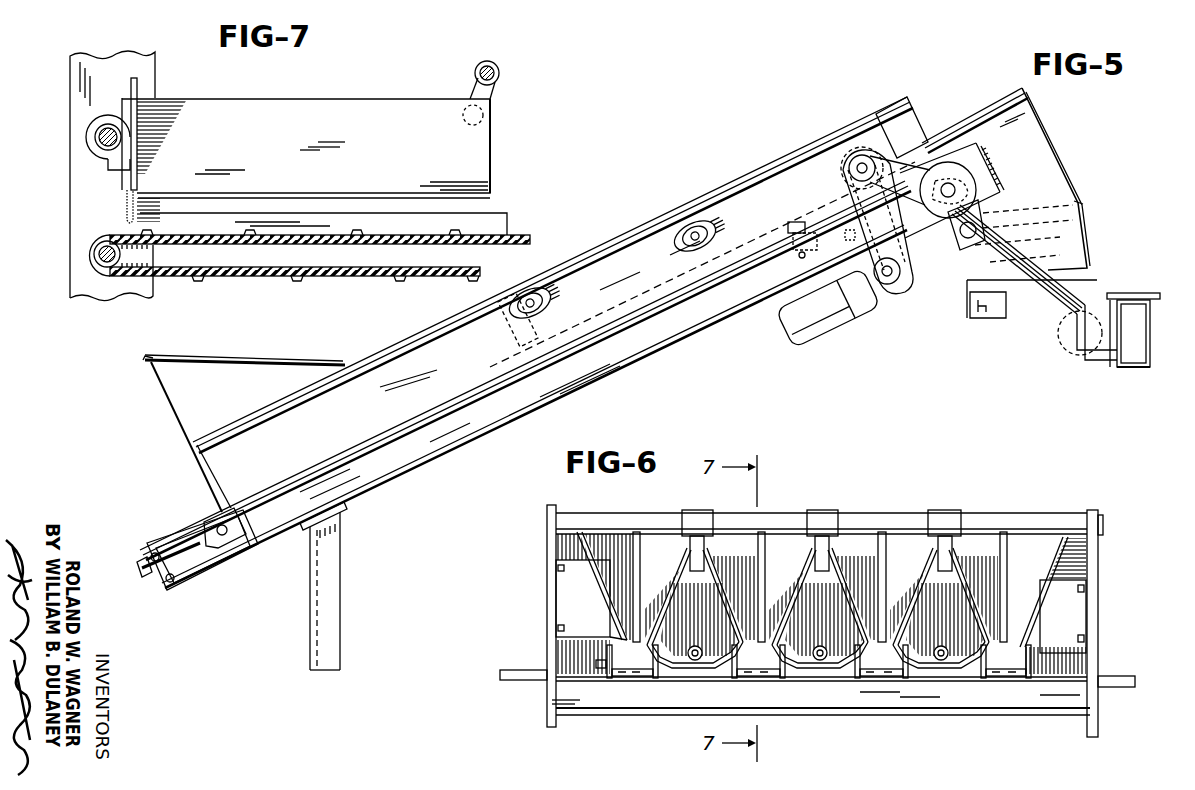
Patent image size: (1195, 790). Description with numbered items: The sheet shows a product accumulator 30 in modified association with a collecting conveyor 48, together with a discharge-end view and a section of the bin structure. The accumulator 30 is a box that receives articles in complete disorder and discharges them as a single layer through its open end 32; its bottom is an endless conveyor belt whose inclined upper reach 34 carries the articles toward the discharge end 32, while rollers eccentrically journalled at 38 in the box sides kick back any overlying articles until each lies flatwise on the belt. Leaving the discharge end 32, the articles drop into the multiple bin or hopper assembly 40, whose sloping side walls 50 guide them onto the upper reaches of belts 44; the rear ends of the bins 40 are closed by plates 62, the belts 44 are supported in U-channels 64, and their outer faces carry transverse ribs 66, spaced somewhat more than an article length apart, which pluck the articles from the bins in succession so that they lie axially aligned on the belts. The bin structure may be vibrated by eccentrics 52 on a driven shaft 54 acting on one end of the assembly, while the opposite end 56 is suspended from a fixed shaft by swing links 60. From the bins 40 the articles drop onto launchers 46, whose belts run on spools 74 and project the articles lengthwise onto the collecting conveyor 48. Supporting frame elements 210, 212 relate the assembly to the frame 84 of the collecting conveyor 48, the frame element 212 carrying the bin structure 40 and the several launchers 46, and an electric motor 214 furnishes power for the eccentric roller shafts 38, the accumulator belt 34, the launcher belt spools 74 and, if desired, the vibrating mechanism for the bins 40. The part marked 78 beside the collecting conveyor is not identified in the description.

In FIG. 5, the accumulator 30 is at (416, 336).
In FIG. 5, the open end 32 is at (905, 110).
In FIG. 5, the inclined upper reach 34 is at (215, 505).
In FIG. 5, the eccentric journal 38 is at (532, 300).
In FIG. 5, the aligning bin 40 is at (1075, 242).
In FIG. 6, the aligning bin 40 is at (652, 540).
In FIG. 7, the belt 44 is at (280, 246).
In FIG. 6, the belt 44 is at (632, 679).
In FIG. 5, the launcher 46 is at (1032, 298).
In FIG. 5, the collecting conveyor 48 is at (1165, 330).
In FIG. 7, the sloping side wall 50 is at (340, 104).
In FIG. 6, the sloping side wall 50 is at (610, 603).
In FIG. 7, the eccentric 52 is at (97, 138).
In FIG. 7, the driven shaft 54 is at (118, 147).
In FIG. 7, the opposite end 56 is at (491, 130).
In FIG. 7, the swing link 60 is at (492, 96).
In FIG. 7, the plate 62 is at (137, 82).
In FIG. 6, the plate 62 is at (725, 542).
In FIG. 6, the U-channel 64 is at (732, 675).
In FIG. 7, the transverse rib 66 is at (357, 235).
In FIG. 6, the transverse rib 66 is at (602, 677).
In FIG. 5, the launcher belt spool 74 is at (985, 320).
In FIG. 5, the cover plate 78 is at (1125, 293).
In FIG. 5, the frame 84 is at (1150, 356).
In FIG. 5, the supporting frame element 210 is at (341, 558).
In FIG. 5, the supporting frame element 212 is at (1052, 312).
In FIG. 5, the electric motor 214 is at (840, 318).